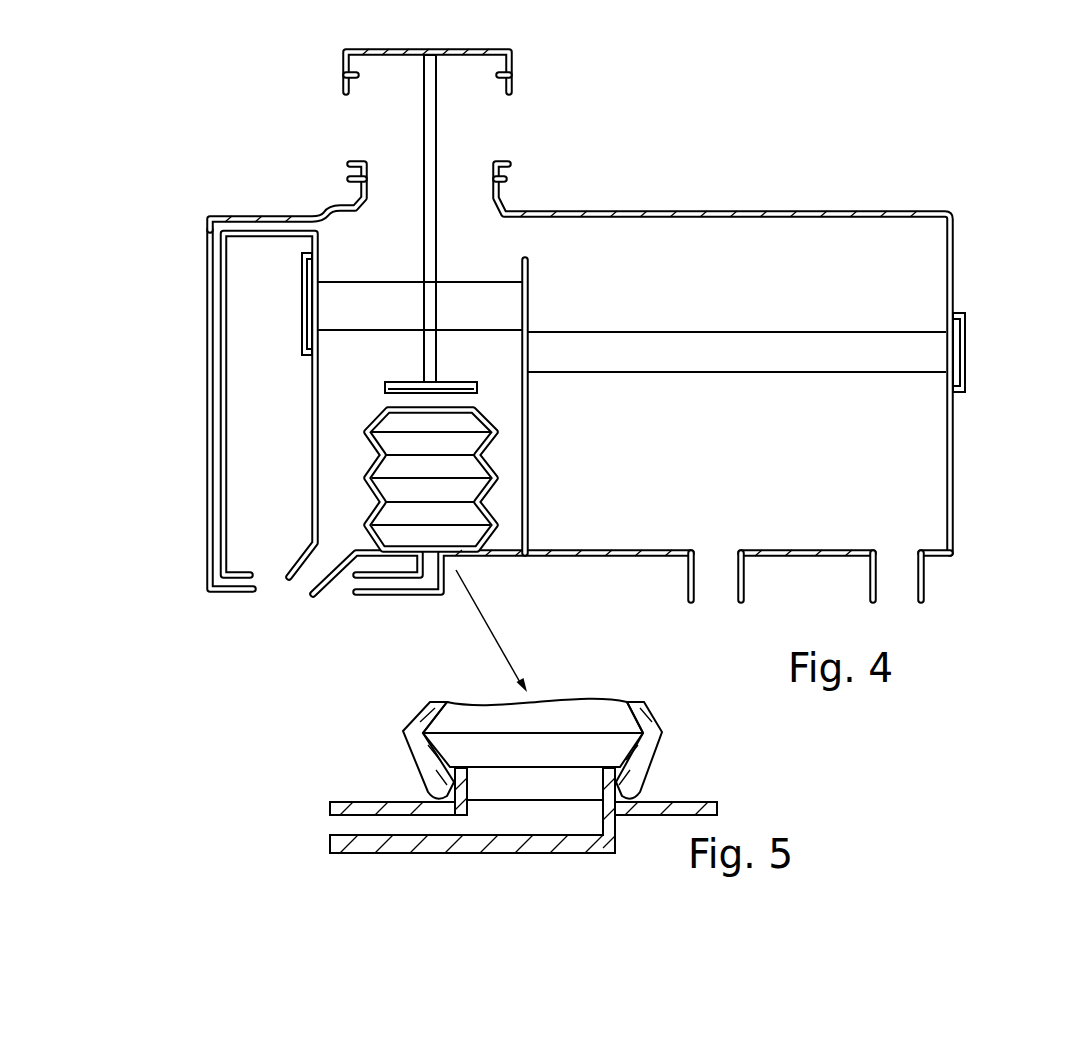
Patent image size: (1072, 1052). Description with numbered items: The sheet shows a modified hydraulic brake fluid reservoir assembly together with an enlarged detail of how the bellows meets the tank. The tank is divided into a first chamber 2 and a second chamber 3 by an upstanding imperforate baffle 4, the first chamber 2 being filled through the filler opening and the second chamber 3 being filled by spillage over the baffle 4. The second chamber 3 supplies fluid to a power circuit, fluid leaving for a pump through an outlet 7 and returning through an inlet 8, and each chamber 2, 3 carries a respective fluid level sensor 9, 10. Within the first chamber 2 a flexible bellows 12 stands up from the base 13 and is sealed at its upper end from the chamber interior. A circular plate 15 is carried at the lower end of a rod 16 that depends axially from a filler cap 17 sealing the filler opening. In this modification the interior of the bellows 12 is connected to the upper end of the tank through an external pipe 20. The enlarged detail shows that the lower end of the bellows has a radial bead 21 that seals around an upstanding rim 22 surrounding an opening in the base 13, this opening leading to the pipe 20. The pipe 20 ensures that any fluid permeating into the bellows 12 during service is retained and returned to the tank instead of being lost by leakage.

In FIG. 4, the first chamber 2 is at (338, 420).
In FIG. 4, the second chamber 3 is at (920, 465).
In FIG. 4, the upstanding imperforate baffle 4 is at (529, 294).
In FIG. 4, the outlet 7 is at (713, 583).
In FIG. 4, the inlet 8 is at (897, 585).
In FIG. 4, the fluid level sensor 9 is at (307, 300).
In FIG. 4, the fluid level sensor 10 is at (967, 328).
In FIG. 4, the flexible bellows 12 is at (397, 518).
In FIG. 4, the base 13 is at (515, 557).
In FIG. 4, the circular plate 15 is at (448, 388).
In FIG. 4, the rod 16 is at (423, 139).
In FIG. 4, the filler cap 17 is at (517, 63).
In FIG. 4, the pipe 20 is at (218, 476).
In FIG. 5, the pipe 20 is at (370, 826).
In FIG. 5, the radial bead 21 is at (640, 782).
In FIG. 5, the upstanding rim 22 is at (455, 781).